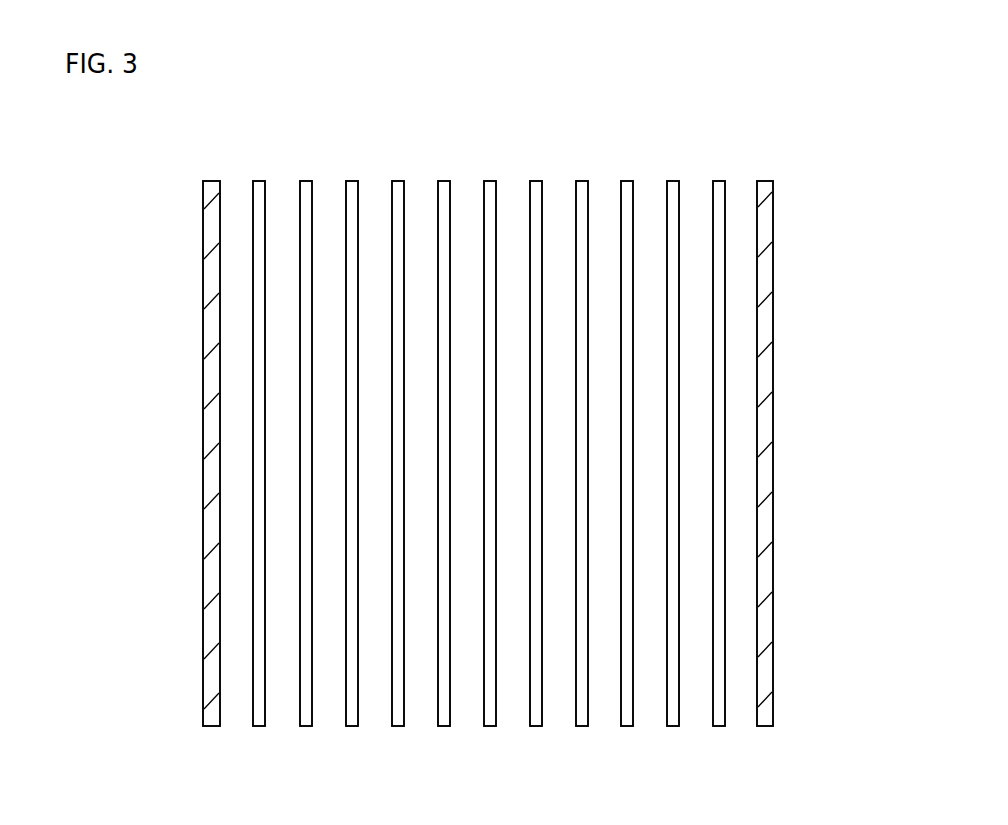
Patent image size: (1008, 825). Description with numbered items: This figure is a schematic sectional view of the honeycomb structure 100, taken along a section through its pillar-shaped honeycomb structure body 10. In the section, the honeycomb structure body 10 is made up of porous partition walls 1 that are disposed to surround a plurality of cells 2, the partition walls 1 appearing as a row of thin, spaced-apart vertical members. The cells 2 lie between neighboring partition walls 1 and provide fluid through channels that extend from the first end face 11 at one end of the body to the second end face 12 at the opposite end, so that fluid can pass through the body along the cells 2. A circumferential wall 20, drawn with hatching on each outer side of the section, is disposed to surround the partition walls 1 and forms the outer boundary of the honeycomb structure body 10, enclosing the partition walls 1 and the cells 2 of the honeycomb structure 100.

The honeycomb structure 100 is at (860, 87).
The partition wall 1 is at (668, 207).
The cell 2 is at (597, 240).
The honeycomb structure body 10 is at (783, 186).
The first end face 11 is at (229, 164).
The second end face 12 is at (244, 741).
The circumferential wall 20 is at (217, 342).